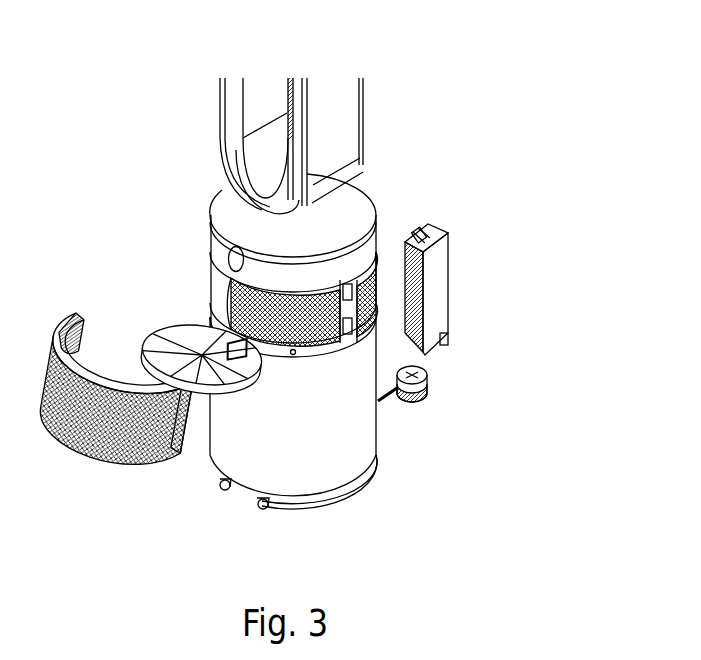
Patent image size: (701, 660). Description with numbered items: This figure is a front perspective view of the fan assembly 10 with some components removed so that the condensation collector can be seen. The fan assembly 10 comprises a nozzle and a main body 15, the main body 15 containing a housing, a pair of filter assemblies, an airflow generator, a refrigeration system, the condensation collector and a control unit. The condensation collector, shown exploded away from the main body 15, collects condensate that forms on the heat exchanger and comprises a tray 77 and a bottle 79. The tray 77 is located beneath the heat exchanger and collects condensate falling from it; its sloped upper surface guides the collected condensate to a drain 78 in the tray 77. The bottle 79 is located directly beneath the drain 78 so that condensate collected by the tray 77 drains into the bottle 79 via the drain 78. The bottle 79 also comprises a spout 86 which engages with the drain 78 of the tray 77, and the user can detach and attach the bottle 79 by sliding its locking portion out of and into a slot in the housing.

The fan assembly 10 is at (413, 78).
The main body 15 is at (378, 430).
The tray 77 is at (160, 347).
The drain 78 is at (237, 332).
The bottle 79 is at (447, 285).
The spout 86 is at (437, 227).